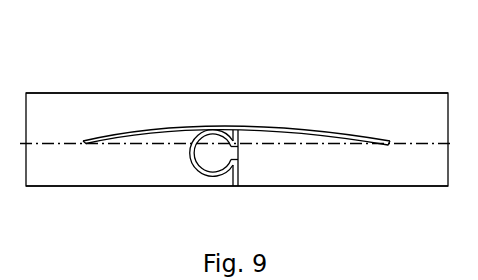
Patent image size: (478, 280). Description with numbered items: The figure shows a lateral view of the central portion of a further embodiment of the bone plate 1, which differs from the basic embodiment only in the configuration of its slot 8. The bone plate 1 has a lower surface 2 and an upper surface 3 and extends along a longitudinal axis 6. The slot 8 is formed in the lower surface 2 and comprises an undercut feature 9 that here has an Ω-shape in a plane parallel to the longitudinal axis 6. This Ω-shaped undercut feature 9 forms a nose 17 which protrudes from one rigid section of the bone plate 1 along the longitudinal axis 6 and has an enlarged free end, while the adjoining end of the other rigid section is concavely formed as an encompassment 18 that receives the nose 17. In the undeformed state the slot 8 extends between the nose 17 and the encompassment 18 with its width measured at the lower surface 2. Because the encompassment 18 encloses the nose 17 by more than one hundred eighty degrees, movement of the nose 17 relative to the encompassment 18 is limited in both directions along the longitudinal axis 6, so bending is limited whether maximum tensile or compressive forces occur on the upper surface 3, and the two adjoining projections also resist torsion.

The bone plate 1 is at (356, 70).
The lower surface 2 is at (107, 186).
The upper surface 3 is at (107, 91).
The longitudinal axis 6 is at (424, 145).
The slot 8 is at (240, 181).
The undercut feature 9 is at (196, 178).
The nose 17 is at (217, 152).
The encompassment 18 is at (193, 159).